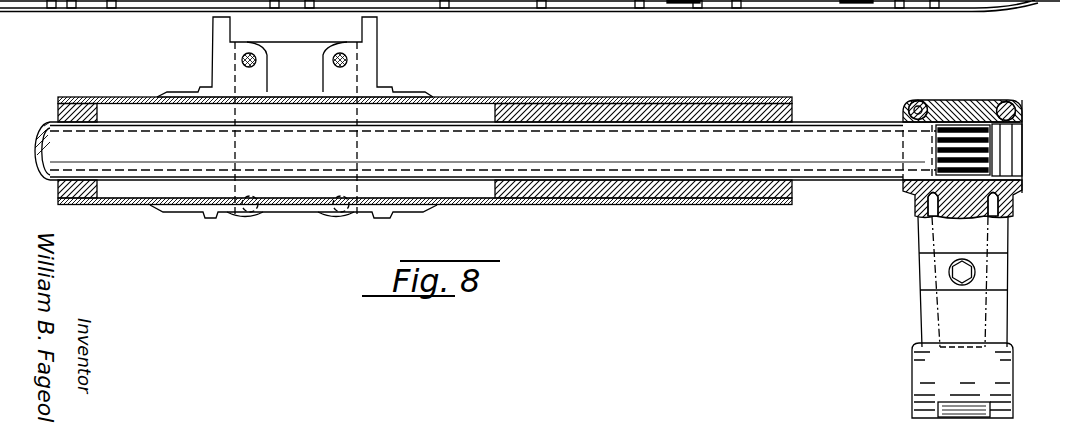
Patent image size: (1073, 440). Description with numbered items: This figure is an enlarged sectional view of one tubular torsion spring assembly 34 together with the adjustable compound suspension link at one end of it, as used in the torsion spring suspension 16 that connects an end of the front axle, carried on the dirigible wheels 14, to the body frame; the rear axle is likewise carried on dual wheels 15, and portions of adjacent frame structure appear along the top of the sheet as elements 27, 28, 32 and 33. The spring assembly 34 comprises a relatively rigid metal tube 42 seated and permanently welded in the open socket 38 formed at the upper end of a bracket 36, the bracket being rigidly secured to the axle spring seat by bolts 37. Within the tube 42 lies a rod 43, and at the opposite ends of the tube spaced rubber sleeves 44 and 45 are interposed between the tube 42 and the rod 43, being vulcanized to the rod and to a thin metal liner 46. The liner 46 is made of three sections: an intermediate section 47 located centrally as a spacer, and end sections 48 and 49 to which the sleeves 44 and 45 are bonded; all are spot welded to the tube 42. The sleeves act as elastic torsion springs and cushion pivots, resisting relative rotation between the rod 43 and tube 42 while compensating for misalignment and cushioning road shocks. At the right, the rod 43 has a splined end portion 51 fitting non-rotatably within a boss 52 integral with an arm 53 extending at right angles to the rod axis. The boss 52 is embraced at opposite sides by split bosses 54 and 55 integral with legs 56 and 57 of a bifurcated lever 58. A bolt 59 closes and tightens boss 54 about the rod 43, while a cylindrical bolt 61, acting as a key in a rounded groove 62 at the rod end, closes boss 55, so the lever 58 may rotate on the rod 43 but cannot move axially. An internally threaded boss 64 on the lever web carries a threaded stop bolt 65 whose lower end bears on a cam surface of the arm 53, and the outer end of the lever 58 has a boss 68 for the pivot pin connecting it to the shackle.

The dirigible wheels 14 is at (820, 4).
The dual wheels 15 is at (155, 4).
The torsion spring suspension 16 is at (265, 228).
The cross member 27 is at (921, 4).
The cross member 28 is at (714, 4).
The bracket 32 is at (287, 4).
The bracket 33 is at (80, 4).
The tubular torsion spring assembly 34 is at (732, 205).
The bracket 36 is at (378, 58).
The bolts 37 is at (312, 62).
The open socket 38 is at (398, 97).
The metal tube 42 is at (702, 102).
The rod 43 is at (820, 122).
The rubber sleeve 44 is at (608, 106).
The rubber sleeve 45 is at (58, 108).
The metal liner 46 is at (461, 112).
The intermediate liner section 47 is at (391, 107).
The liner end section 48 is at (548, 101).
The liner end section 49 is at (81, 100).
The splined end portion 51 is at (970, 126).
The boss 52 is at (944, 108).
The arm 53 is at (1015, 192).
The split boss 54 is at (911, 103).
The split boss 55 is at (1012, 101).
The leg 56 is at (912, 214).
The leg 57 is at (1010, 216).
The bifurcated lever 58 is at (1000, 247).
The bolt 59 is at (920, 106).
The cylindrical bolt 61 is at (1023, 117).
The rounded groove 62 is at (1013, 163).
The internally threaded boss 64 is at (990, 271).
The stop bolt 65 is at (963, 259).
The boss 68 is at (1012, 378).